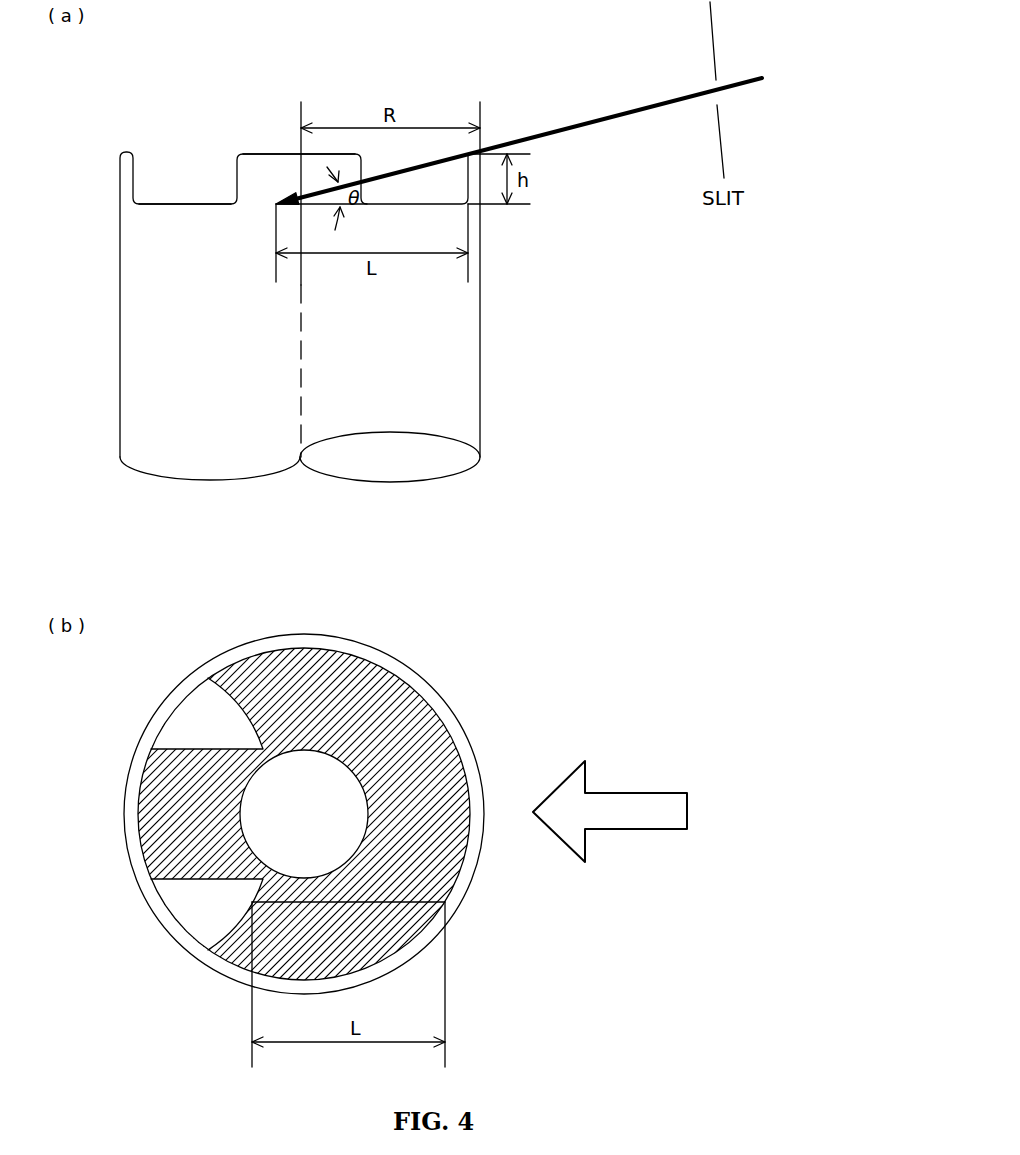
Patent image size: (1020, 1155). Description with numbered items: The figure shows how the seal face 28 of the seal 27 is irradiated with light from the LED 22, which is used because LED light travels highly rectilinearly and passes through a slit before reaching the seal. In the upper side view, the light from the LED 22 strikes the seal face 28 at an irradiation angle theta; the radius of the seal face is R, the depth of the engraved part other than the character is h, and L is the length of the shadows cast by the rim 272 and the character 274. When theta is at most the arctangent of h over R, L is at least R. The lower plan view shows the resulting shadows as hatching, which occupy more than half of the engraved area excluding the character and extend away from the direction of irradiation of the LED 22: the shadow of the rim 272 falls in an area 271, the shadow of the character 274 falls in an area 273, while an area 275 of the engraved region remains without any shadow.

The LED 22 is at (556, 466).
The seal 27 is at (226, 383).
The seal face 28 is at (165, 202).
The area 271 is at (457, 772).
The rim 272 is at (430, 698).
The area 273 is at (143, 768).
The character 274 is at (328, 775).
The area 275 is at (200, 698).